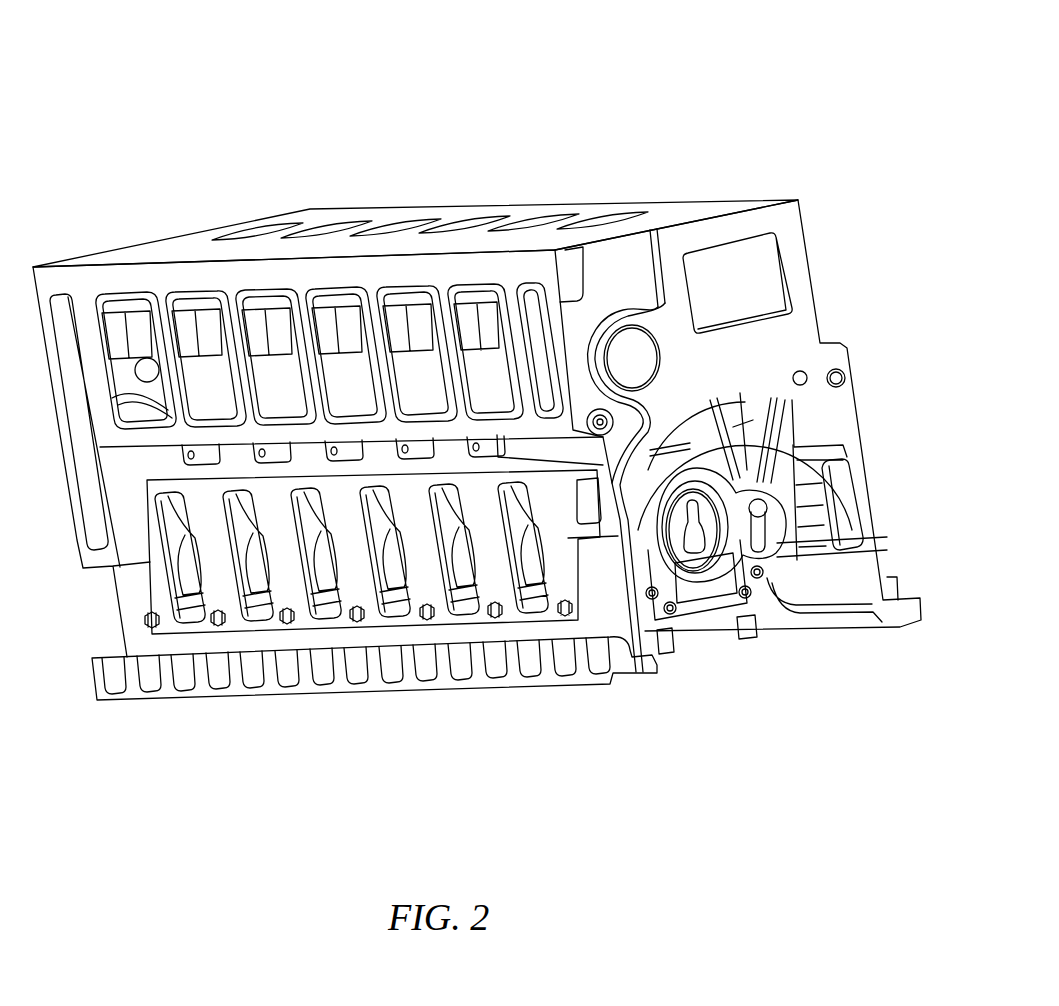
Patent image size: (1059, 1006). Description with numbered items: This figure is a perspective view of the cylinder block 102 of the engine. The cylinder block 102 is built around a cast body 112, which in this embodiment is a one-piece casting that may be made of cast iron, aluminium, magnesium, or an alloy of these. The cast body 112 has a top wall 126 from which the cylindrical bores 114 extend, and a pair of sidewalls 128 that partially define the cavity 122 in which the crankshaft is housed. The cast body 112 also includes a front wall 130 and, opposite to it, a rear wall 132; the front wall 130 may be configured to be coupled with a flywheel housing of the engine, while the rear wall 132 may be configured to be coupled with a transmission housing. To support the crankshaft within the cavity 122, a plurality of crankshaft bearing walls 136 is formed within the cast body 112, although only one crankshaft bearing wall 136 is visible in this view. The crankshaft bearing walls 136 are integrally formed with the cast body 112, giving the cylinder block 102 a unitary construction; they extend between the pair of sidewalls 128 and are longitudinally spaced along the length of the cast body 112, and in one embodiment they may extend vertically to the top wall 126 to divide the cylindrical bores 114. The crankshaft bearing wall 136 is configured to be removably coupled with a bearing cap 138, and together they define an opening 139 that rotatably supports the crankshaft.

The cylinder block 102 is at (822, 66).
The cast body 112 is at (797, 169).
The cylindrical bores 114 is at (247, 221).
The cavity 122 is at (864, 542).
The top wall 126 is at (698, 208).
The sidewalls 128 is at (500, 205).
The front wall 130 is at (783, 342).
The rear wall 132 is at (78, 257).
The crankshaft bearing wall 136 is at (745, 456).
The bearing cap 138 is at (708, 598).
The opening 139 is at (729, 529).